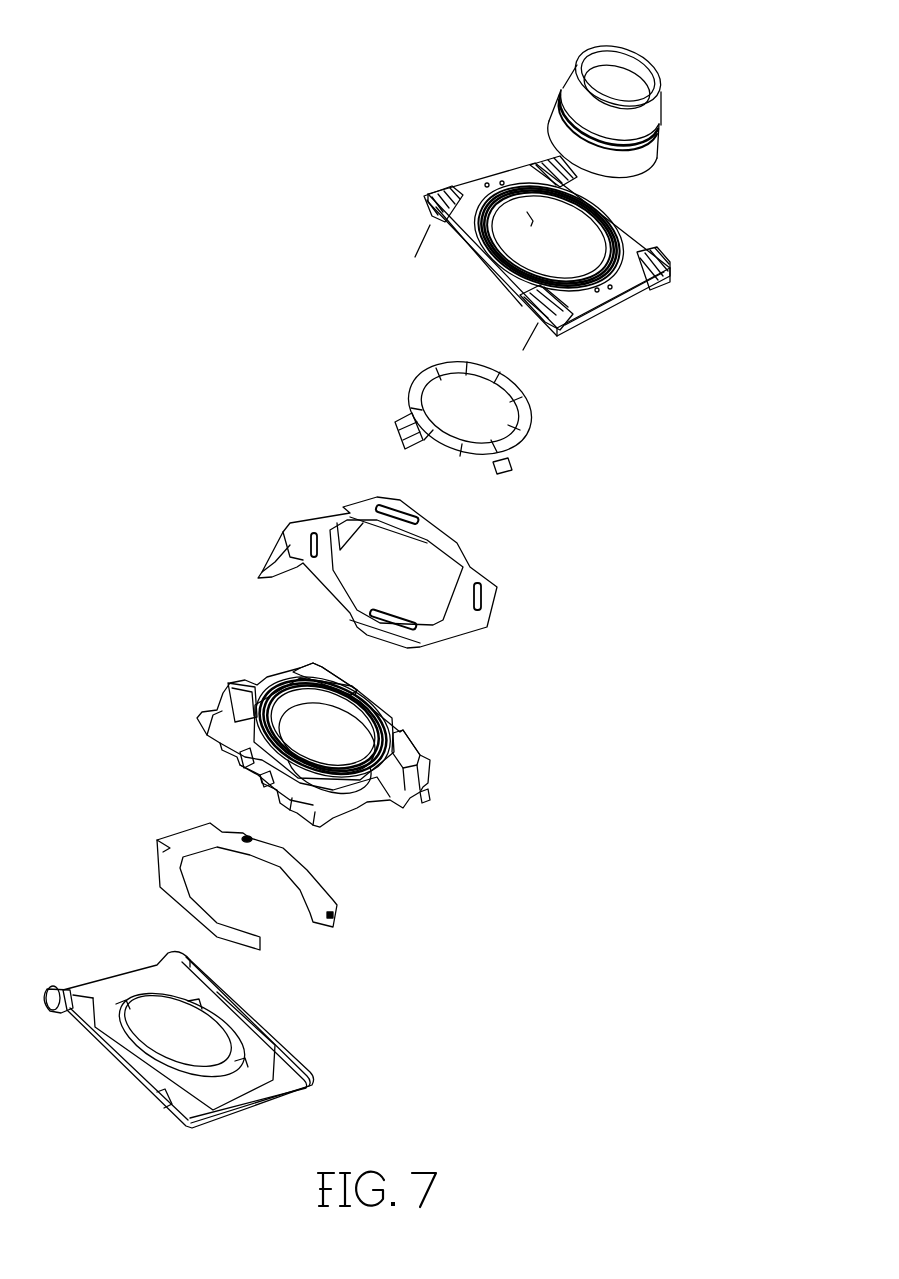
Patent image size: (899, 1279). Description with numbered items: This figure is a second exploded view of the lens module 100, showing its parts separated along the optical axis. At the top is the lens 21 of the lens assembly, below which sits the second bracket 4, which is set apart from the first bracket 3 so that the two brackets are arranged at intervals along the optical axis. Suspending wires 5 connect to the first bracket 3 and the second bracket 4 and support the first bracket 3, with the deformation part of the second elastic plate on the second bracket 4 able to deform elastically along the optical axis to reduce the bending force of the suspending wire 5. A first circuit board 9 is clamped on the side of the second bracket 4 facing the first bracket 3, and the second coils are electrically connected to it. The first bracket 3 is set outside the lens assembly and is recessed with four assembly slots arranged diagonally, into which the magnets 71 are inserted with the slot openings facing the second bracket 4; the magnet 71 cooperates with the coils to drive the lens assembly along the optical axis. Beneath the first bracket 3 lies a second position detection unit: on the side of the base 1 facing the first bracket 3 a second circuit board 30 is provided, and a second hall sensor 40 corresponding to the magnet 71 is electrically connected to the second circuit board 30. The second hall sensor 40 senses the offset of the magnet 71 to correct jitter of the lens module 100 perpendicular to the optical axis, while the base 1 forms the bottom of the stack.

The lens module 100 is at (528, 43).
The lens 21 is at (655, 125).
The second bracket 4 is at (623, 241).
The suspending wire 5 is at (630, 325).
The first circuit board 9 is at (470, 565).
The first bracket 3 is at (420, 752).
The magnet 71 is at (405, 740).
The second circuit board 30 is at (330, 896).
The second hall sensor 40 is at (247, 836).
The base 1 is at (247, 1107).